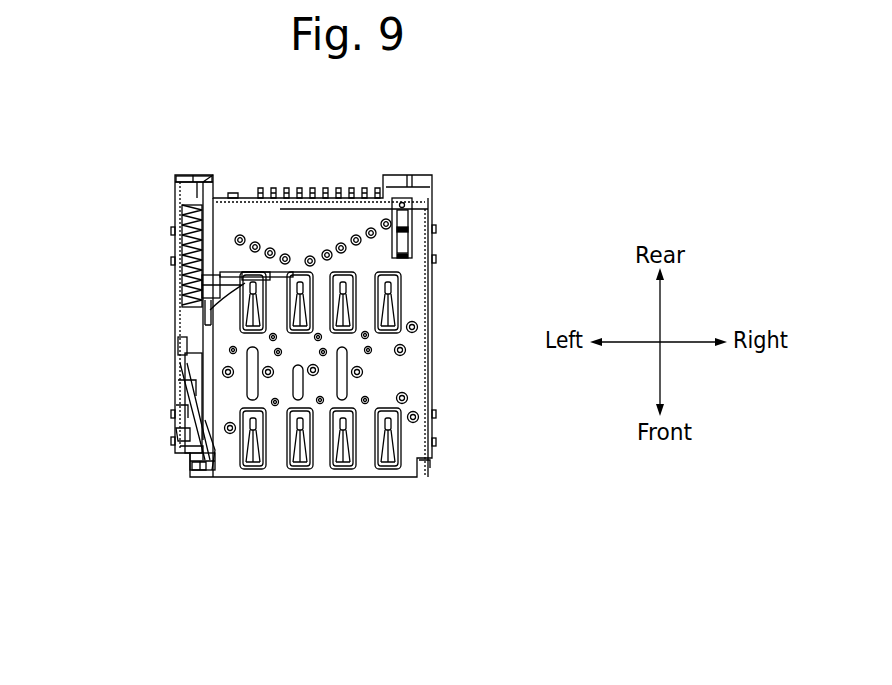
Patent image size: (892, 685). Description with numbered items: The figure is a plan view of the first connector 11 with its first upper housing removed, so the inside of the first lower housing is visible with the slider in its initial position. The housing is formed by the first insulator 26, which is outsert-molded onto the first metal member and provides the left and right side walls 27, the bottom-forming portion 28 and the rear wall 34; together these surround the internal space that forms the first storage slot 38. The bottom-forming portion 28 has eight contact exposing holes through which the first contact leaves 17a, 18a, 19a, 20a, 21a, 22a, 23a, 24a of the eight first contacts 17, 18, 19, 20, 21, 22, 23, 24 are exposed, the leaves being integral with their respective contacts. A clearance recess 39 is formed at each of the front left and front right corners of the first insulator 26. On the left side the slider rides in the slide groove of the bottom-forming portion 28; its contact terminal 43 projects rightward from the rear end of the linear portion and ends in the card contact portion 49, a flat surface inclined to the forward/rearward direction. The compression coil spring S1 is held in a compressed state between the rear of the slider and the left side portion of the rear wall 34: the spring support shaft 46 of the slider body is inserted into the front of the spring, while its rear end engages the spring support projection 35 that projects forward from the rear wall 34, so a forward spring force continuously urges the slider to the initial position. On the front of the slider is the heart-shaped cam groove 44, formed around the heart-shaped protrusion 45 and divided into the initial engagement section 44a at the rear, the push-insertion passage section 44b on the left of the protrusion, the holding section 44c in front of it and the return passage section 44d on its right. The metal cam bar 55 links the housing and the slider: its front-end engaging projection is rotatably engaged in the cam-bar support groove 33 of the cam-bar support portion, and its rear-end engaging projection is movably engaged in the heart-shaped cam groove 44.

The first connector 11 is at (128, 199).
The compression coil spring S1 is at (175, 243).
The spring support projection 35 is at (192, 210).
The card contact portion 49 is at (248, 273).
The rear wall 34 is at (356, 207).
The first contact 21 is at (335, 226).
The first contact leaf 21a is at (267, 305).
The first contact 22 is at (409, 263).
The first contact leaf 22a is at (300, 292).
The first contact 23 is at (430, 279).
The first contact leaf 23a is at (346, 293).
The first contact 24 is at (453, 302).
The first contact leaf 24a is at (390, 293).
The side wall 27 is at (177, 313).
The bottom-forming portion 28 is at (420, 330).
The first storage slot 38 is at (420, 367).
The first insulator 26 is at (420, 398).
The clearance recess 39 is at (184, 462).
The contact terminal 43 is at (177, 284).
The spring support shaft 46 is at (177, 340).
The heart-shaped cam groove 44 is at (134, 406).
The initial engagement section 44a is at (177, 367).
The push-insertion passage section 44b is at (177, 388).
The cam bar 55 is at (177, 406).
The heart-shaped protrusion 45 is at (177, 430).
The holding section 44c is at (178, 448).
The return passage section 44d is at (212, 428).
The cam-bar support groove 33 is at (205, 475).
The first contact 17 is at (269, 484).
The first contact leaf 17a is at (250, 465).
The first contact 18 is at (321, 466).
The first contact leaf 18a is at (300, 462).
The first contact 19 is at (377, 484).
The first contact leaf 19a is at (347, 467).
The first contact 20 is at (416, 466).
The first contact leaf 20a is at (388, 463).